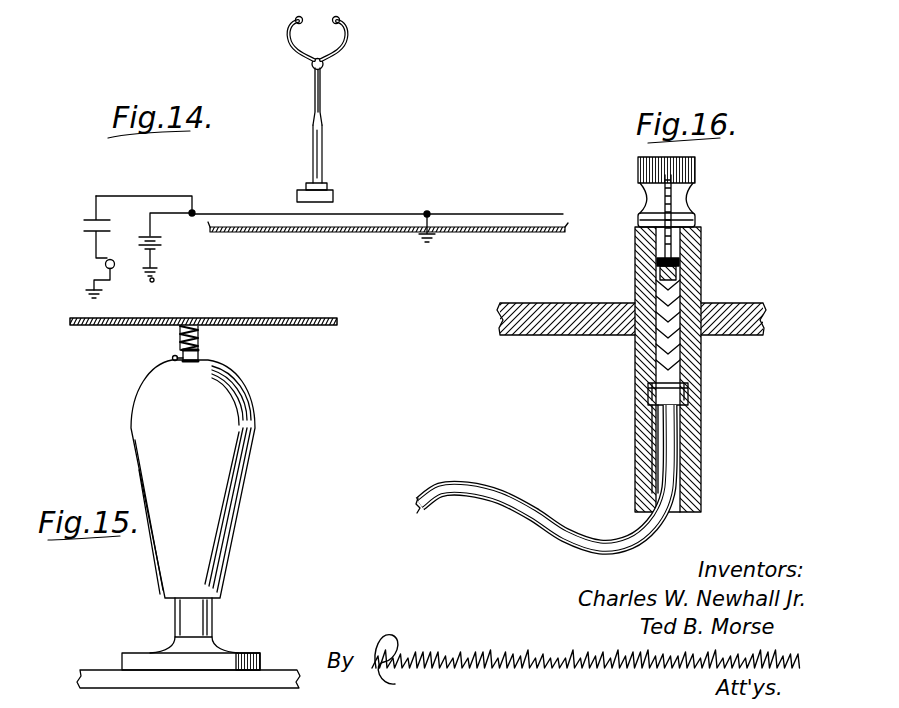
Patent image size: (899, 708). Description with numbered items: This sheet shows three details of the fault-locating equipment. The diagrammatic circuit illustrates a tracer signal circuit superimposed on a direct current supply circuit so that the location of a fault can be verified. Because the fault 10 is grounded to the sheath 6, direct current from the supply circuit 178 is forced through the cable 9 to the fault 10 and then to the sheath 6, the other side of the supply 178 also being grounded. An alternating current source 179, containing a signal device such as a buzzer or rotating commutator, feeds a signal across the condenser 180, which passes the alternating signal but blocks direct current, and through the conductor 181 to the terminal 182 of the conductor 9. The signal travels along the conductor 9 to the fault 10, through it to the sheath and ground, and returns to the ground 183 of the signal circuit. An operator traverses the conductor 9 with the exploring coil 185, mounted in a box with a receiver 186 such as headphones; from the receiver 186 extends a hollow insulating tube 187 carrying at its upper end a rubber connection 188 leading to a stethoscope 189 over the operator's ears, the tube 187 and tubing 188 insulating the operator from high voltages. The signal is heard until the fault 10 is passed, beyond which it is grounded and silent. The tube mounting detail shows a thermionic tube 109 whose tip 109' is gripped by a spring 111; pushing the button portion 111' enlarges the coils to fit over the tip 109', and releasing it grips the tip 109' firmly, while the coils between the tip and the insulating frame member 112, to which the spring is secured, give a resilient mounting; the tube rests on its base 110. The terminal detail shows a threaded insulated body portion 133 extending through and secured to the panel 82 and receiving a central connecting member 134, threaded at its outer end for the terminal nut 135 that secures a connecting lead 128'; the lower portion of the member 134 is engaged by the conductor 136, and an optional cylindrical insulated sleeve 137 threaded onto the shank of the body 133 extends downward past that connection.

In FIG. 14, the sheath 6 is at (488, 231).
In FIG. 14, the cable 9 is at (474, 213).
In FIG. 14, the fault 10 is at (428, 212).
In FIG. 16, the panel 82 is at (590, 303).
In FIG. 15, the thermionic tube 109 is at (219, 479).
In FIG. 15, the tip 109' is at (242, 357).
In FIG. 15, the tube base 110 is at (222, 660).
In FIG. 15, the spring 111 is at (226, 340).
In FIG. 15, the button portion 111' is at (154, 358).
In FIG. 15, the insulating frame member 112 is at (250, 318).
In FIG. 14, the lead 128' is at (529, 12).
In FIG. 16, the threaded insulated body portion 133 is at (696, 243).
In FIG. 16, the central connecting member 134 is at (682, 272).
In FIG. 16, the terminal nut 135 is at (696, 167).
In FIG. 16, the conductor 136 is at (672, 462).
In FIG. 16, the cylindrical insulated sleeve 137 is at (702, 392).
In FIG. 14, the direct current supply circuit 178 is at (163, 242).
In FIG. 14, the alternating current source 179 is at (104, 265).
In FIG. 14, the condenser 180 is at (88, 238).
In FIG. 14, the conductor 181 is at (169, 196).
In FIG. 14, the terminal 182 is at (194, 211).
In FIG. 14, the ground 183 is at (86, 290).
In FIG. 14, the exploring coil 185 is at (334, 196).
In FIG. 14, the receiver 186 is at (328, 185).
In FIG. 14, the hollow insulating tube 187 is at (324, 141).
In FIG. 14, the rubber connection 188 is at (323, 100).
In FIG. 14, the stethoscope 189 is at (340, 50).